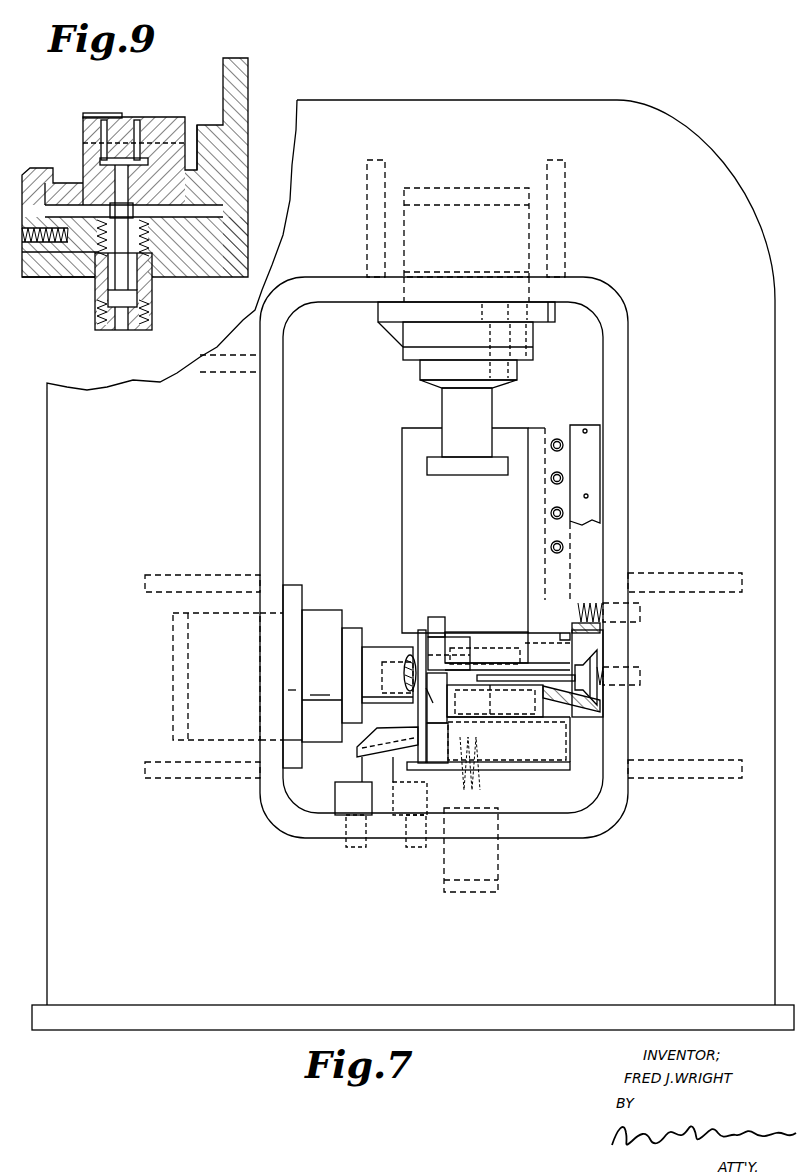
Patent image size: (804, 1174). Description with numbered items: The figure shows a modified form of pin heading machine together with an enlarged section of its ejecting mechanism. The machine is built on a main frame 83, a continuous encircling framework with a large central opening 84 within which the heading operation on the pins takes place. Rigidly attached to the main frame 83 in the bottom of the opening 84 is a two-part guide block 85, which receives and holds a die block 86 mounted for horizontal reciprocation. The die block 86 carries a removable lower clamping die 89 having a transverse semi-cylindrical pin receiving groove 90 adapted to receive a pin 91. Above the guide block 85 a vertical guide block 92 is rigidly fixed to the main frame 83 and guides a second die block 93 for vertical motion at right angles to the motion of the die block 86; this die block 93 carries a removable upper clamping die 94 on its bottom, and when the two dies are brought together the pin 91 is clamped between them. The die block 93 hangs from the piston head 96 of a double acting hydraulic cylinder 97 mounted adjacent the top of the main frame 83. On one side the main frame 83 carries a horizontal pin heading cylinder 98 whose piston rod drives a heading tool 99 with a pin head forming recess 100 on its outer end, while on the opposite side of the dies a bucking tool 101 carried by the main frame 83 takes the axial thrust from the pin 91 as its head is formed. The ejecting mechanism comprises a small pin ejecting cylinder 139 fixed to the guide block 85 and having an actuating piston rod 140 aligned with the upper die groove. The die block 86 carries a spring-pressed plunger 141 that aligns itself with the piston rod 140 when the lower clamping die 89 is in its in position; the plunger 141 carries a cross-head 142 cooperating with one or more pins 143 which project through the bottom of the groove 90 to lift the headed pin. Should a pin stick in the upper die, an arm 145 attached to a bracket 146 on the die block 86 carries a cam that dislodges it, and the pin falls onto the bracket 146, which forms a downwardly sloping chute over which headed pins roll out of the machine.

In FIG. 9, the main frame 83 is at (212, 287).
In FIG. 7, the main frame 83 is at (665, 93).
In FIG. 7, the central opening 84 is at (444, 557).
In FIG. 9, the guide block 85 is at (28, 175).
In FIG. 7, the guide block 85 is at (600, 700).
In FIG. 9, the die block 86 is at (172, 167).
In FIG. 7, the die block 86 is at (510, 716).
In FIG. 9, the lower clamping die 89 is at (157, 128).
In FIG. 7, the lower clamping die 89 is at (437, 706).
In FIG. 9, the pin receiving groove 90 is at (101, 115).
In FIG. 7, the pin 91 is at (458, 673).
In FIG. 7, the vertical guide block 92 is at (580, 452).
In FIG. 7, the die block 93 is at (465, 530).
In FIG. 7, the upper clamping die 94 is at (440, 645).
In FIG. 7, the piston head 96 is at (468, 427).
In FIG. 7, the hydraulic cylinder 97 is at (523, 330).
In FIG. 7, the pin heading cylinder 98 is at (310, 633).
In FIG. 7, the heading tool 99 is at (376, 667).
In FIG. 7, the pin head forming recess 100 is at (408, 662).
In FIG. 7, the bucking tool 101 is at (533, 678).
In FIG. 9, the pin ejecting cylinder 139 is at (110, 298).
In FIG. 7, the pin ejecting cylinder 139 is at (473, 885).
In FIG. 9, the piston rod 140 is at (123, 258).
In FIG. 9, the spring-pressed plunger 141 is at (117, 188).
In FIG. 9, the cross-head 142 is at (100, 152).
In FIG. 9, the pins 143 is at (125, 118).
In FIG. 7, the arm 145 is at (431, 617).
In FIG. 7, the bracket 146 is at (426, 757).